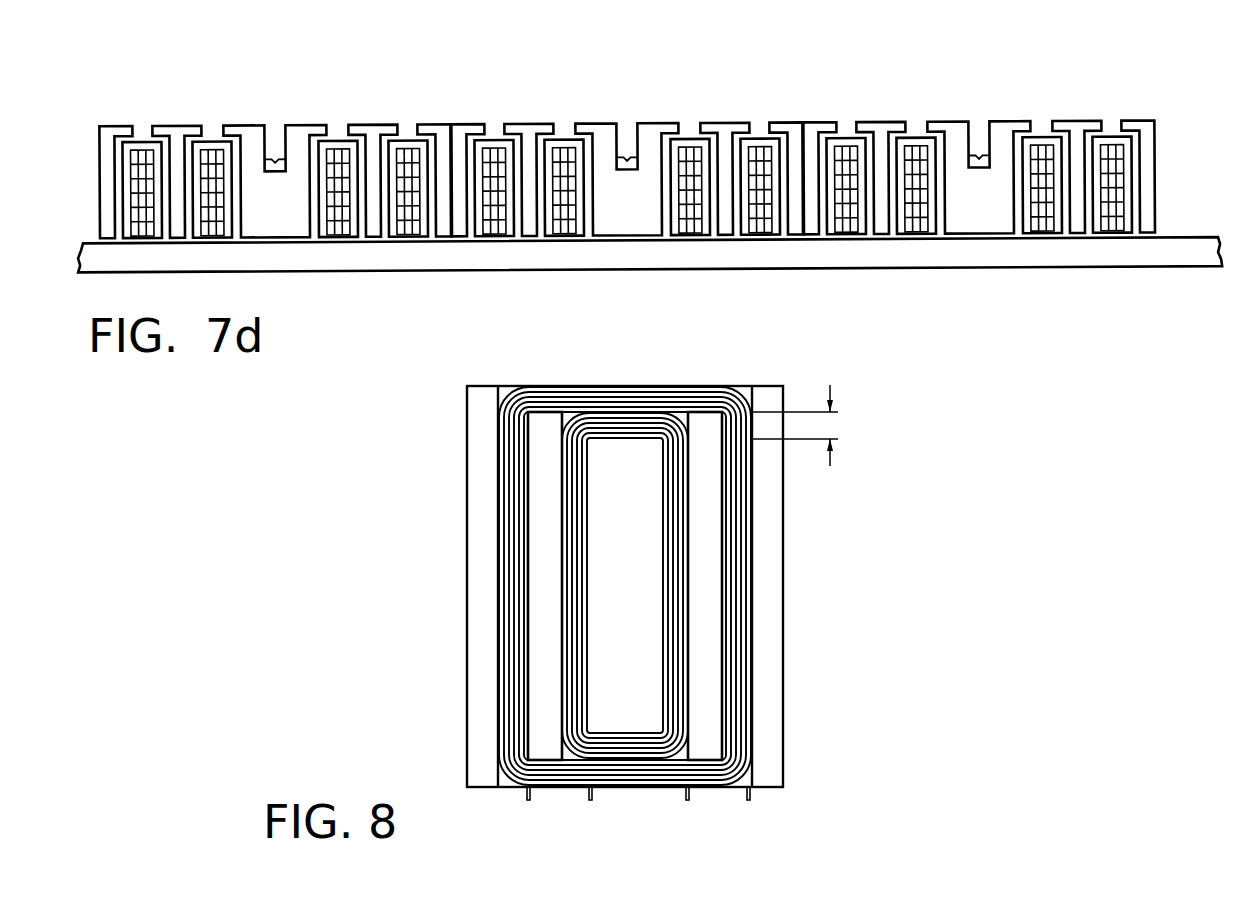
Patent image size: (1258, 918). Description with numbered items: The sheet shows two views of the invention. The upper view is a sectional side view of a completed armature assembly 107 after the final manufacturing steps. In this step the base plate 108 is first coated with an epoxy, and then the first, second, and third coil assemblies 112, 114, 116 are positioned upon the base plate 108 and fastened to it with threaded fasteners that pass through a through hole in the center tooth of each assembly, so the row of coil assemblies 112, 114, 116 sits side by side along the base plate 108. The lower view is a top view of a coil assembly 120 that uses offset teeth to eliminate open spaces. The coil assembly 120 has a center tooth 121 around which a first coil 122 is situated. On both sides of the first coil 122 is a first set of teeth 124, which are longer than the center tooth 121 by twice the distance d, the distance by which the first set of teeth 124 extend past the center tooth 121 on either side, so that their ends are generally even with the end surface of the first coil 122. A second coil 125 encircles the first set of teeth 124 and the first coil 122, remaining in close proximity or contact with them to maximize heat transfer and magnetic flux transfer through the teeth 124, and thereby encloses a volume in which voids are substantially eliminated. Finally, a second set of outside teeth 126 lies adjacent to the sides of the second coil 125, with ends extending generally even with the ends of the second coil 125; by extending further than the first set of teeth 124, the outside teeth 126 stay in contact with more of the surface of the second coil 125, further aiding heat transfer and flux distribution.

In FIG. 7d, the armature assembly 107 is at (627, 126).
In FIG. 7d, the base plate 108 is at (1165, 236).
In FIG. 7d, the first coil assembly 112 is at (307, 124).
In FIG. 7d, the second coil assembly 114 is at (660, 123).
In FIG. 7d, the third coil assembly 116 is at (1017, 121).
In FIG. 8, the coil assembly 120 is at (652, 584).
In FIG. 8, the center tooth 121 is at (600, 438).
In FIG. 8, the first coil 122 is at (683, 418).
In FIG. 8, the first set of teeth 124 is at (578, 758).
In FIG. 8, the second coil 125 is at (498, 396).
In FIG. 8, the second set of outside teeth 126 is at (788, 772).